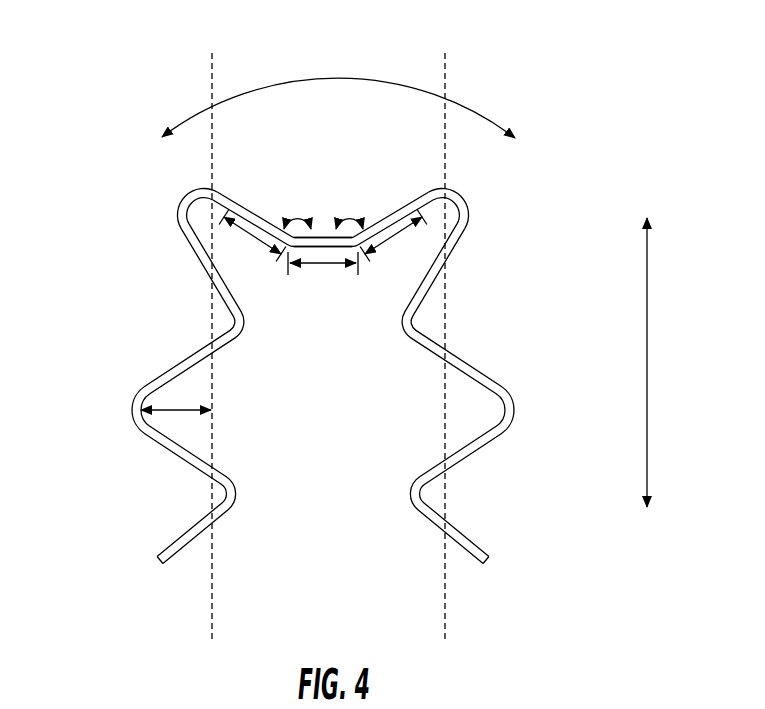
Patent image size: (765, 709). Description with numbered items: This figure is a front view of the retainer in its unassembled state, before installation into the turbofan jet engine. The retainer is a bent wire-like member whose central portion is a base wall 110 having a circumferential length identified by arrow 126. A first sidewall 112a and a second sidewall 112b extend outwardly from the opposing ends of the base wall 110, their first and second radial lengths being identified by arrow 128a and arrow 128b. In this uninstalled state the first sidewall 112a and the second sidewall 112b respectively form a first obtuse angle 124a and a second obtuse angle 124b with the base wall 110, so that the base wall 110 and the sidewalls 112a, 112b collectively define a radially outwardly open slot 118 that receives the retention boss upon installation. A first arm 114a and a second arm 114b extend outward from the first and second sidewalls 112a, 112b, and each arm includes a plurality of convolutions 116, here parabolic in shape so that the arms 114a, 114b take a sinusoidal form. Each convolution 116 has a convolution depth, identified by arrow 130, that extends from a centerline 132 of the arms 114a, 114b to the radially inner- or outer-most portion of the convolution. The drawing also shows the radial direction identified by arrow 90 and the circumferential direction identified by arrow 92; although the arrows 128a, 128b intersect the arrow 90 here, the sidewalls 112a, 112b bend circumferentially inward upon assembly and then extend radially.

The arrow identifying the radial direction 90 is at (647, 368).
The arrow identifying the circumferential direction 92 is at (497, 127).
The base wall 110 is at (330, 249).
The first sidewall 112a is at (268, 238).
The second sidewall 112b is at (392, 218).
The first arm 114a is at (177, 325).
The second arm 114b is at (460, 328).
The convolutions 116 is at (447, 188).
The slot 118 is at (321, 228).
The first obtuse angle 124a is at (301, 216).
The second obtuse angle 124b is at (348, 216).
The arrow identifying the circumferential length of the base wall 126 is at (316, 266).
The arrow identifying the first radial length 128a is at (212, 227).
The arrow identifying the second radial length 128b is at (380, 250).
The arrow identifying the convolution depth 130 is at (178, 410).
The centerline 132 is at (212, 80).